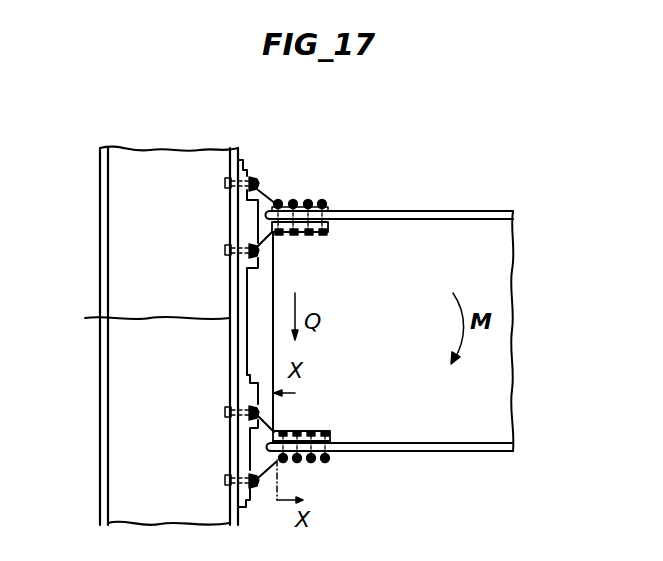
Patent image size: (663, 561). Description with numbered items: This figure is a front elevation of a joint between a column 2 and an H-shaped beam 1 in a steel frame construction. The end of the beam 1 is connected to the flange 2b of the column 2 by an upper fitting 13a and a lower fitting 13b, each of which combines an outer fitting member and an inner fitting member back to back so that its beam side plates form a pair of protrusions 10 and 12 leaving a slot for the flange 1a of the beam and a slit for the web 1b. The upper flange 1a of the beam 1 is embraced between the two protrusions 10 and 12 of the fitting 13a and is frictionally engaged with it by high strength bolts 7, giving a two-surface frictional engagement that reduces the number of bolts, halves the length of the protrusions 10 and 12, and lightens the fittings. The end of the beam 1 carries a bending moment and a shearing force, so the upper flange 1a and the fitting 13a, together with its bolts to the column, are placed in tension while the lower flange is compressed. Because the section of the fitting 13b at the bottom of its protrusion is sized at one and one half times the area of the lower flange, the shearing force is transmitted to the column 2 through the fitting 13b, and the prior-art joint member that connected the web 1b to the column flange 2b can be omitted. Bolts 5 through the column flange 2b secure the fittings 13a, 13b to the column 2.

The H-shaped beam 1 is at (515, 242).
The flange of the beam 1a is at (462, 211).
The web of the beam 1b is at (378, 211).
The column 2 is at (205, 155).
The flange of the column 2b is at (137, 319).
The bolt 5 is at (230, 250).
The high strength bolts 7 is at (312, 201).
The protrusion 10 is at (327, 230).
The protrusion 12 is at (340, 222).
The fitting for the upper flange 13a is at (255, 180).
The fitting for the lower flange 13b is at (250, 440).